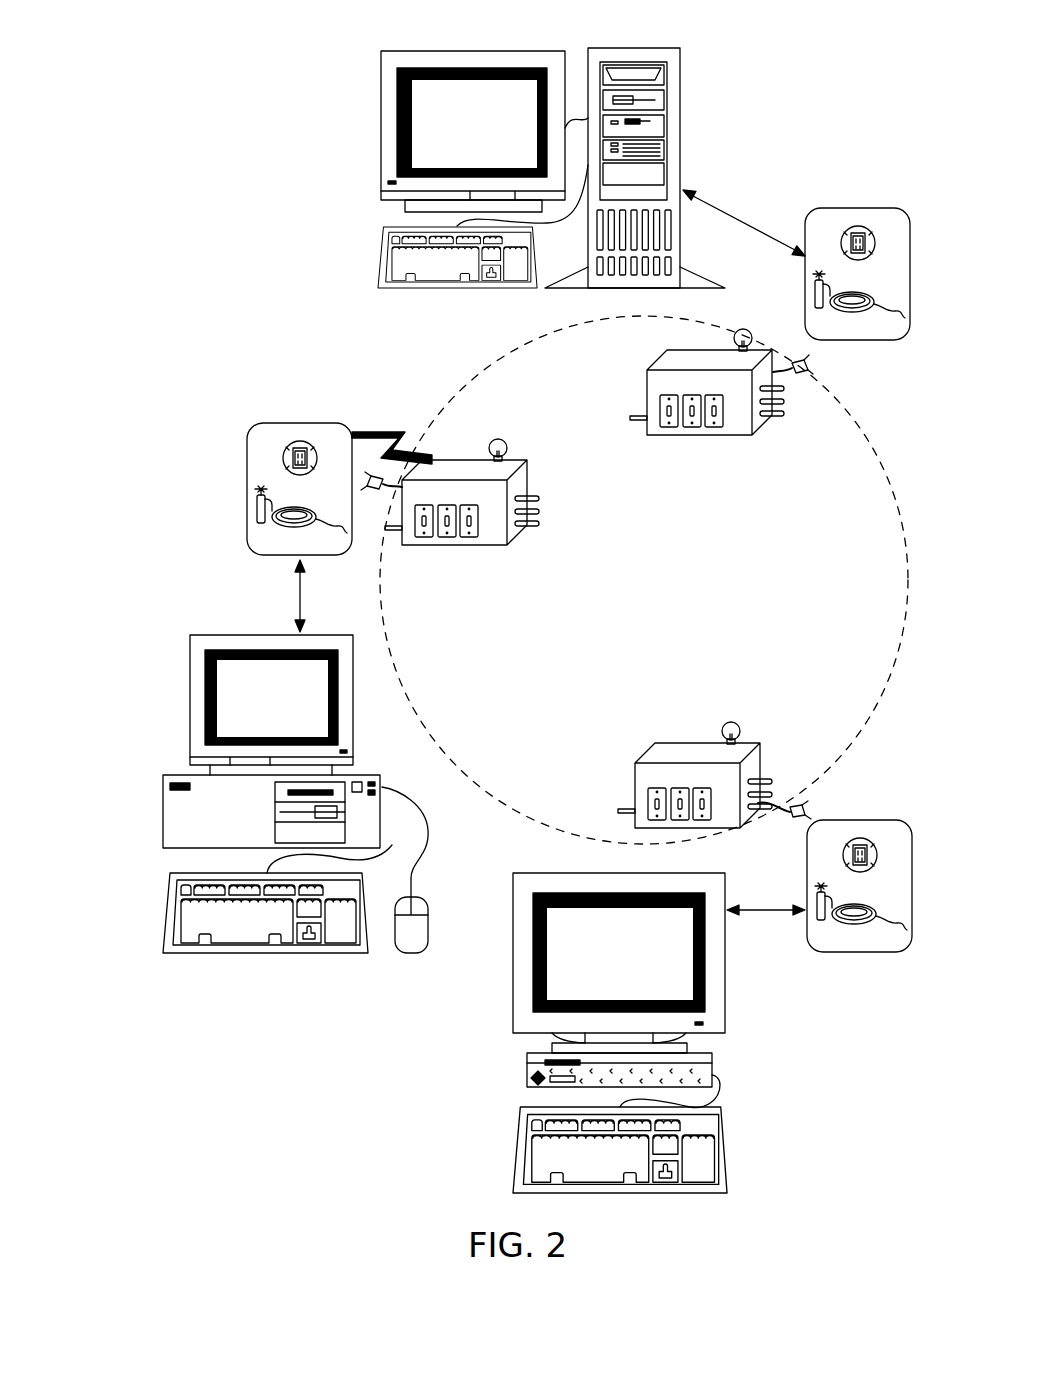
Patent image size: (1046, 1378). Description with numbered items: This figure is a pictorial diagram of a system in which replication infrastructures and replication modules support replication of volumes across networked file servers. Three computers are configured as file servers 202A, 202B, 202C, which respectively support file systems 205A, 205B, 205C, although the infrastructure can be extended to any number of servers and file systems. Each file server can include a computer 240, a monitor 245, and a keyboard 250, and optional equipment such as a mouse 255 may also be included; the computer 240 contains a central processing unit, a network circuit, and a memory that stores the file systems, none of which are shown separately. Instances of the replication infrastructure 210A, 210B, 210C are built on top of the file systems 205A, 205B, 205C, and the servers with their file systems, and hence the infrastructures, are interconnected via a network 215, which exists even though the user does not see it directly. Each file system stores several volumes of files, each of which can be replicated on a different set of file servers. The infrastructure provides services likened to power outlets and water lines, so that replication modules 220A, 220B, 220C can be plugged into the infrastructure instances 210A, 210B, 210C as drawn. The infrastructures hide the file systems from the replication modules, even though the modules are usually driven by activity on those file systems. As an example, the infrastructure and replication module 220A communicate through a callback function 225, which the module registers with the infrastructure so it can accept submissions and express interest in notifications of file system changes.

The file server 202A is at (163, 812).
The file server 202B is at (527, 1082).
The file server 202C is at (681, 155).
The file system 205A is at (226, 1037).
The file system 205B is at (794, 1116).
The file system 205C is at (733, 85).
The replication infrastructure 210A is at (235, 304).
The replication infrastructure 210B is at (830, 950).
The replication infrastructure 210C is at (852, 209).
The network 215 is at (542, 325).
The replication module 220A is at (443, 546).
The replication module 220B is at (705, 742).
The replication module 220C is at (722, 434).
The callback function 225 is at (372, 432).
The computer 240 is at (380, 790).
The monitor 245 is at (247, 635).
The keyboard 250 is at (262, 953).
The mouse 255 is at (400, 953).